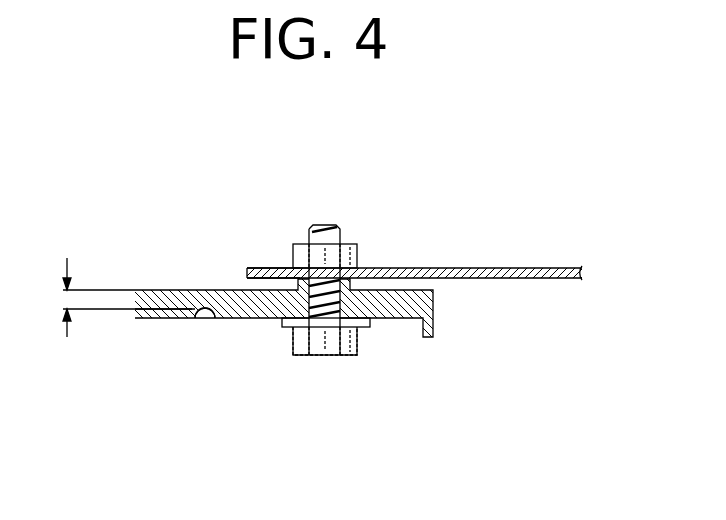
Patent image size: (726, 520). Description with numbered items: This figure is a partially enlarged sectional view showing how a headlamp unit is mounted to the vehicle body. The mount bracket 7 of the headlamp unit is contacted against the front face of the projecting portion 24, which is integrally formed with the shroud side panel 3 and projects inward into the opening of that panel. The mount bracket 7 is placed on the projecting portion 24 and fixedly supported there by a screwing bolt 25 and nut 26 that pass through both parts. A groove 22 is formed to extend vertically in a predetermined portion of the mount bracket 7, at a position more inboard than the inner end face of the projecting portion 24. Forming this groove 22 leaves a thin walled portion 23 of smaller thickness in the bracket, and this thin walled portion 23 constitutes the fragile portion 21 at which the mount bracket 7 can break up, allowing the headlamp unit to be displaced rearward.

The shroud side panel 3 is at (530, 278).
The mount bracket 7 is at (255, 318).
The fragile portion 21 is at (203, 290).
The groove 22 is at (203, 310).
The thin walled portion 23 is at (121, 322).
The projecting portion 24 is at (270, 267).
The bolt 25 is at (357, 344).
The nut 26 is at (358, 257).